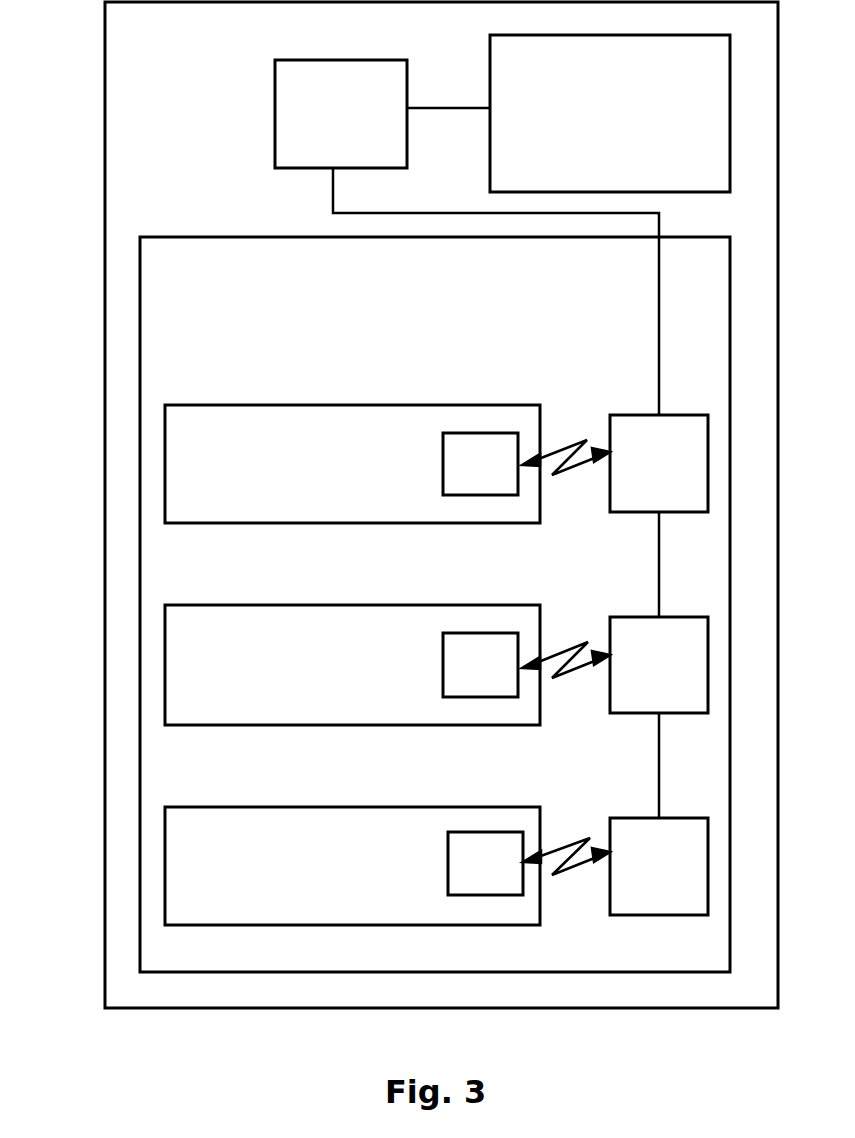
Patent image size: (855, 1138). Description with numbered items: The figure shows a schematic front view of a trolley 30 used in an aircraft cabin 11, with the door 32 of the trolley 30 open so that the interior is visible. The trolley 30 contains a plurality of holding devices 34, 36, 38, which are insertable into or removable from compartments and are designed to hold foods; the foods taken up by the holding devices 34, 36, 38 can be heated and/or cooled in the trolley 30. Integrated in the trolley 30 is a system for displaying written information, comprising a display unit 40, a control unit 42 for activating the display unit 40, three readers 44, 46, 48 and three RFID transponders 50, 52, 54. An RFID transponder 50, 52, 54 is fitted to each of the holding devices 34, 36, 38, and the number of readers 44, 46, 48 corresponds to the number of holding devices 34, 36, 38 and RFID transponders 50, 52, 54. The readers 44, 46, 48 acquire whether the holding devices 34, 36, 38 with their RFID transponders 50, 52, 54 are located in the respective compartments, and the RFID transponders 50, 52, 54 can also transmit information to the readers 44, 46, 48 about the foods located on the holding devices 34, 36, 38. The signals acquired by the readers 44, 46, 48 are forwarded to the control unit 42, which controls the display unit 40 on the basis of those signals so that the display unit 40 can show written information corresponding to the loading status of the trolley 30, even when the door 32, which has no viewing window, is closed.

The aircraft cabin 11 is at (59, 181).
The trolley 30 is at (167, 53).
The door 32 is at (238, 237).
The holding device 34 is at (352, 464).
The holding device 36 is at (352, 665).
The holding device 38 is at (352, 866).
The display unit 40 is at (610, 113).
The control unit 42 is at (341, 114).
The reader 44 is at (659, 463).
The reader 46 is at (659, 665).
The reader 48 is at (659, 866).
The RFID transponder 50 is at (480, 464).
The RFID transponder 52 is at (480, 665).
The RFID transponder 54 is at (485, 863).